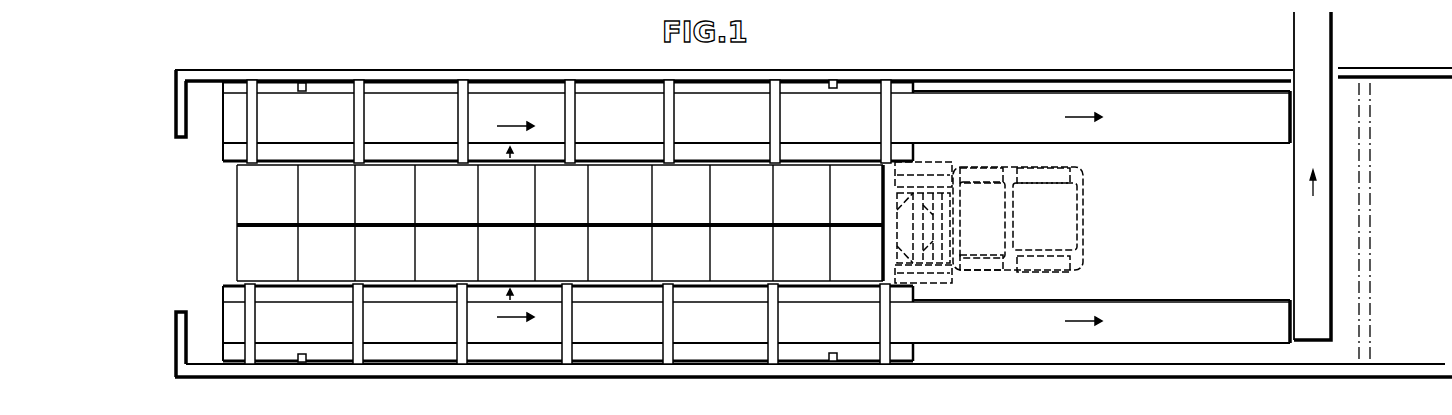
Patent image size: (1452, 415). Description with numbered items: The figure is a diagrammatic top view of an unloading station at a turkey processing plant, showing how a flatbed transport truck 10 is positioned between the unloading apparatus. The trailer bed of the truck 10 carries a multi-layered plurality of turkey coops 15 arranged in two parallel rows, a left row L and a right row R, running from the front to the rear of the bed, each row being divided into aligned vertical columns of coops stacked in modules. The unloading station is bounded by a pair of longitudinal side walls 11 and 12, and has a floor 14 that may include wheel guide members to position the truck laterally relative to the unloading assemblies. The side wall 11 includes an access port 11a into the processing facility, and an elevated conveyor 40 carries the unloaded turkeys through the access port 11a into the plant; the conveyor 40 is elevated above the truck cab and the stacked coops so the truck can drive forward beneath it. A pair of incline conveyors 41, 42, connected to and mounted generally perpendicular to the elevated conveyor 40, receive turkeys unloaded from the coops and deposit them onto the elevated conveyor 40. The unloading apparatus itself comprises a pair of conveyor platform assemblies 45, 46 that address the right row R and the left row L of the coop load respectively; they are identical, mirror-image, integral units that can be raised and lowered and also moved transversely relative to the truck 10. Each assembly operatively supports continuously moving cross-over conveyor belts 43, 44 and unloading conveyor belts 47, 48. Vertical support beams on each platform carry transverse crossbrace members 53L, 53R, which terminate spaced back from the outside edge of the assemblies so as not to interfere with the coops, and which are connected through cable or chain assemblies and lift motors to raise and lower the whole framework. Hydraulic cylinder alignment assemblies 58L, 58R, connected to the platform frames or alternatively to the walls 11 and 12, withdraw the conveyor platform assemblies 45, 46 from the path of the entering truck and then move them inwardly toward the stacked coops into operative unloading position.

The flatbed transport truck 10 is at (1086, 247).
The side wall 11 is at (1085, 372).
The access port 11a is at (1291, 66).
The side wall 12 is at (1037, 72).
The floor 14 is at (1228, 237).
The turkey cages or coops 15 is at (237, 236).
The left row L is at (237, 194).
The right row R is at (237, 252).
The elevated conveyor 40 is at (1328, 54).
The incline conveyor 41 is at (1160, 301).
The incline conveyor 42 is at (1176, 133).
The cross-over conveyor belt 43 is at (223, 292).
The cross-over conveyor belt 44 is at (223, 160).
The conveyor platform assembly 45 is at (712, 344).
The conveyor platform assembly 46 is at (601, 89).
The unloading conveyor belt 47 is at (504, 338).
The unloading conveyor belt 48 is at (527, 104).
The transverse crossbrace member 53L is at (461, 84).
The transverse crossbrace member 53R is at (250, 361).
The hydraulic cylinder alignment assembly 58L is at (302, 84).
The hydraulic cylinder alignment assembly 58R is at (303, 363).